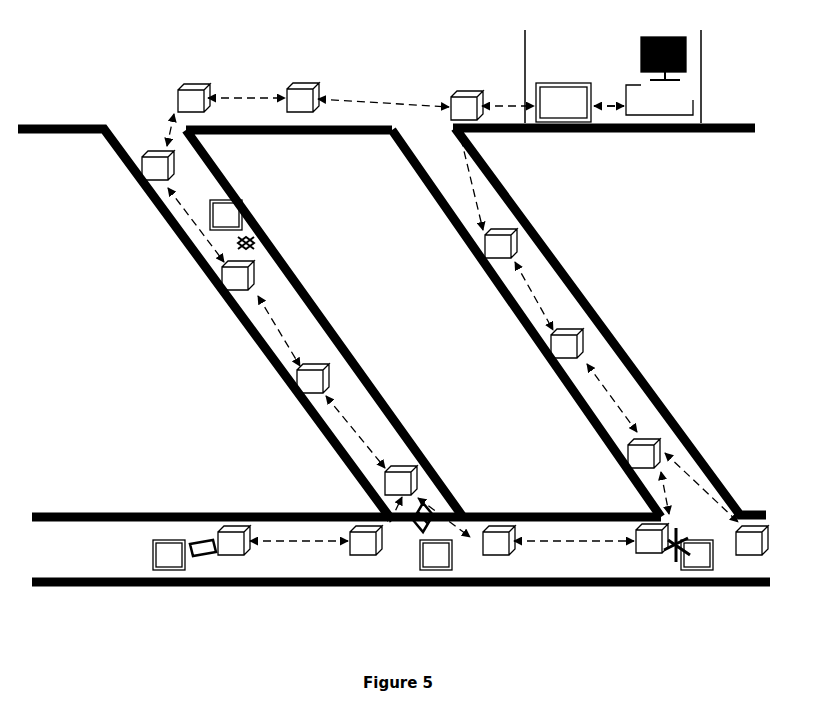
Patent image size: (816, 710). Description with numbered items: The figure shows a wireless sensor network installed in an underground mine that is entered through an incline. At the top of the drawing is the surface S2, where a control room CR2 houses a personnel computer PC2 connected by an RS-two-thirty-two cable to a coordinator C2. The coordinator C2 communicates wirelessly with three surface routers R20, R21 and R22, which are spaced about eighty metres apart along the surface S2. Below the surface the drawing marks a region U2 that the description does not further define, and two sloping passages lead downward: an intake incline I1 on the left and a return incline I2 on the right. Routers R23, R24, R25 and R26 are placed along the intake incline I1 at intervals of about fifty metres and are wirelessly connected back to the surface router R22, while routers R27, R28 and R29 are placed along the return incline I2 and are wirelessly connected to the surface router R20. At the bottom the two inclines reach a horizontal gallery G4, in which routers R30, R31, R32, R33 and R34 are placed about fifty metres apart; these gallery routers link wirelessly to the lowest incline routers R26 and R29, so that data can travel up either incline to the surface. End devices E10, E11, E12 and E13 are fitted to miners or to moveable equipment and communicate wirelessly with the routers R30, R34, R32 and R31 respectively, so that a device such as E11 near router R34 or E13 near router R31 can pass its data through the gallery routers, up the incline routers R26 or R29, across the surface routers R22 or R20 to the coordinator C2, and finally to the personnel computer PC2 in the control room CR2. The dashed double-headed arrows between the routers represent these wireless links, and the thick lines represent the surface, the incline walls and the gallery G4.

The surface S2 is at (204, 306).
The second intermediate level U2 is at (362, 323).
The gallery G4 is at (401, 549).
The intake incline I1 is at (279, 330).
The return incline I2 is at (543, 296).
The coordinator C2 is at (563, 102).
The personnel computer PC2 is at (659, 76).
The control room CR2 is at (609, 89).
The router R20 is at (467, 105).
The router R21 is at (303, 97).
The router R22 is at (194, 98).
The router R23 is at (158, 165).
The router R24 is at (238, 275).
The router R25 is at (313, 378).
The router R26 is at (401, 480).
The router R27 is at (501, 243).
The router R28 is at (567, 343).
The router R29 is at (644, 453).
The router R30 is at (752, 540).
The router R31 is at (652, 538).
The router R32 is at (499, 540).
The router R33 is at (366, 540).
The router R34 is at (234, 540).
The end device E10 is at (232, 224).
The end device E11 is at (184, 555).
The end device E12 is at (432, 536).
The end device E13 is at (688, 549).